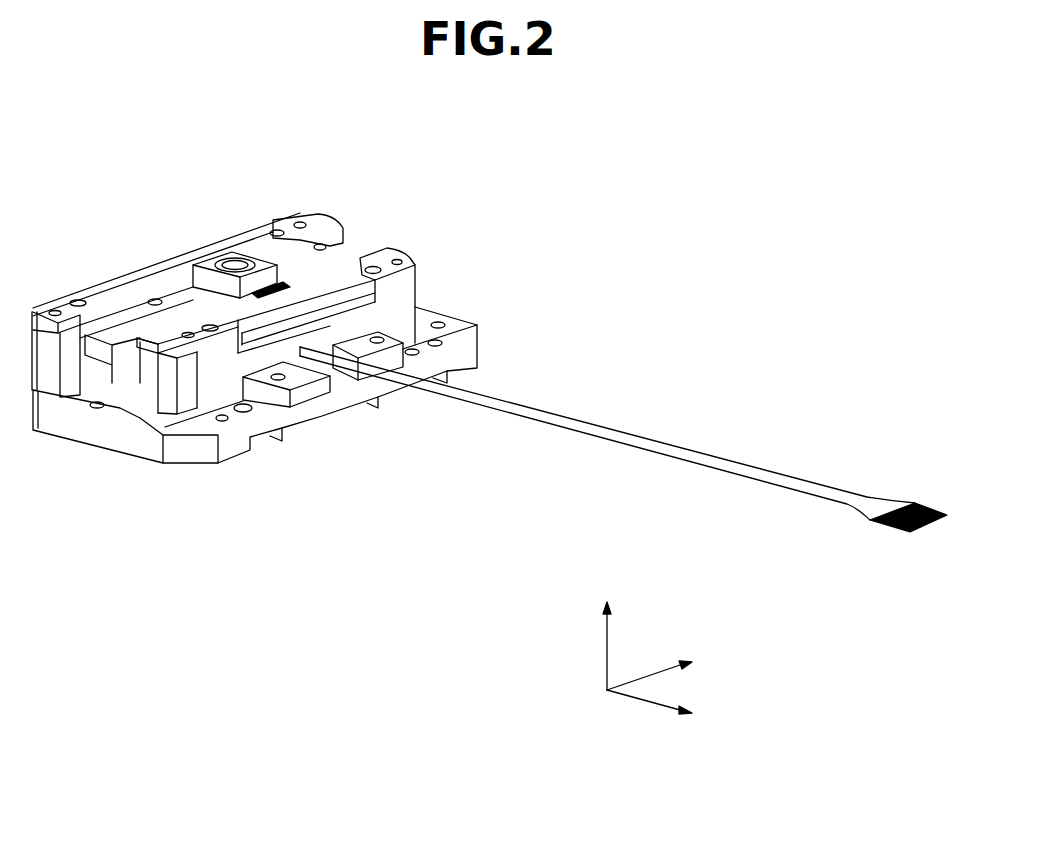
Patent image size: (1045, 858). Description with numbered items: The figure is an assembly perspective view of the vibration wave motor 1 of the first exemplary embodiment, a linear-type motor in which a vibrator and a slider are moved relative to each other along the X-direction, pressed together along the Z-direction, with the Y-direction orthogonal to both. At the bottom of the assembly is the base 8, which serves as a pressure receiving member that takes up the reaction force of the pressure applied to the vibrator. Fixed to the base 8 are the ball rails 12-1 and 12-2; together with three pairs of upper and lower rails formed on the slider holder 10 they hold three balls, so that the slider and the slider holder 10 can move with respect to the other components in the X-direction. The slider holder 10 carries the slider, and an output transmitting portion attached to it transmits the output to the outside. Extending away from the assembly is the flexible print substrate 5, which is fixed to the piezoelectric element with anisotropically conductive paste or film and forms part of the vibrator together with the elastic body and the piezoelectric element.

The vibration wave motor 1 is at (651, 190).
The flexible print substrate 5 is at (535, 413).
The base 8 is at (478, 327).
The slider holder 10 is at (180, 295).
The ball rail 12-1 is at (403, 245).
The ball rail 12-2 is at (323, 220).